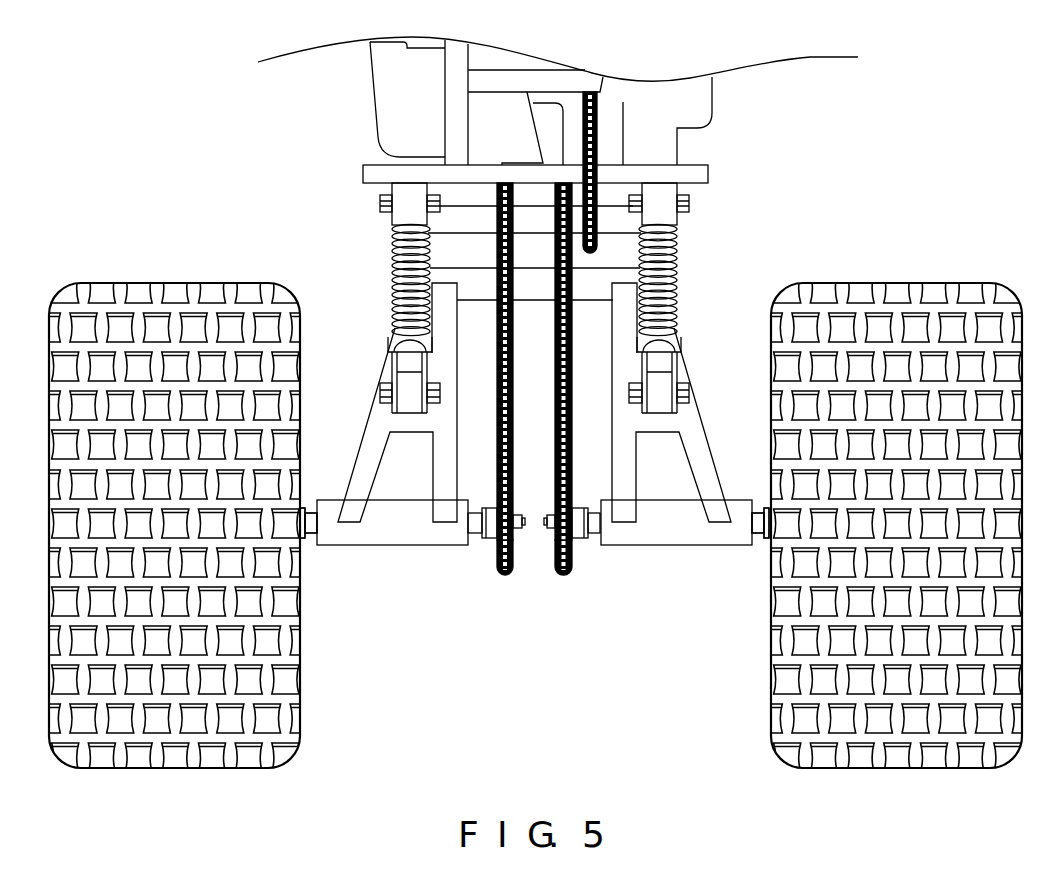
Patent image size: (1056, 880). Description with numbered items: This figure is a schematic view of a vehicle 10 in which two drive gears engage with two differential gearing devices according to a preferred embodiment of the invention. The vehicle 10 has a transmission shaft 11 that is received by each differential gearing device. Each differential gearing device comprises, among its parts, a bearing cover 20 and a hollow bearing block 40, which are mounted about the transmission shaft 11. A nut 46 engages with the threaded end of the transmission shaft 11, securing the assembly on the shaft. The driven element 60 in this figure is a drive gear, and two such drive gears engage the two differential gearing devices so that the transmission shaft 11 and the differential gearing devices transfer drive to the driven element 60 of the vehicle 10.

The vehicle 10 is at (763, 186).
The transmission shaft 11 is at (313, 516).
The bearing cover 20 is at (480, 511).
The hollow bearing block 40 is at (490, 534).
The nut 46 is at (551, 514).
The driven element 60 is at (556, 548).